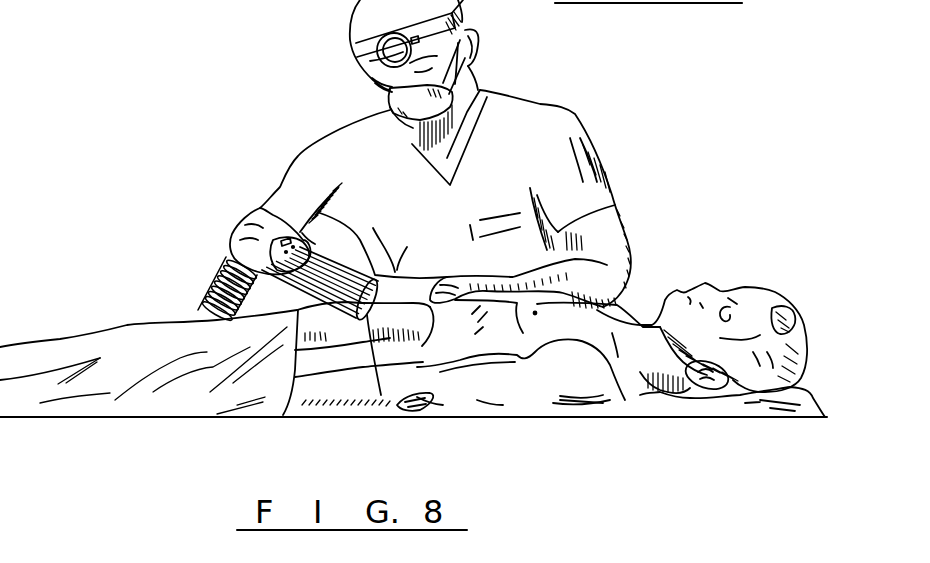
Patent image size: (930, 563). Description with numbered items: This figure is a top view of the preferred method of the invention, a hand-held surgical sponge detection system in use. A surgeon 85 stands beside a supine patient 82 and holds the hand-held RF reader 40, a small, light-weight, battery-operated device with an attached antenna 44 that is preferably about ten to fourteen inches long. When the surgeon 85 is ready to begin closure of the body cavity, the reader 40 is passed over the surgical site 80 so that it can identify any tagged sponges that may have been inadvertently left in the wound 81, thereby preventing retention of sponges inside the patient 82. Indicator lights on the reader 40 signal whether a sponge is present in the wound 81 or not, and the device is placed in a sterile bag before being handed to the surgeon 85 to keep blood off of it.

The hand-held RF reader 40 is at (266, 242).
The antenna of reader 44 is at (207, 288).
The surgical site 80 is at (313, 313).
The wound 81 is at (381, 395).
The patient 82 is at (603, 381).
The surgeon 85 is at (523, 104).